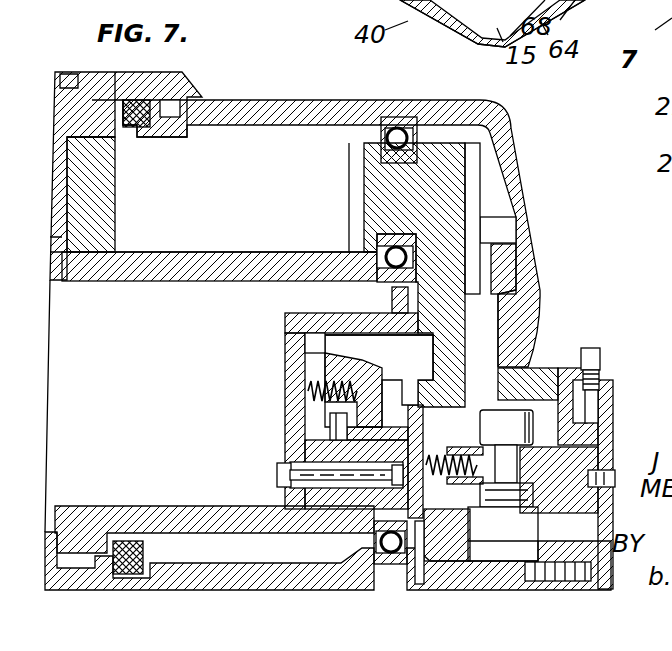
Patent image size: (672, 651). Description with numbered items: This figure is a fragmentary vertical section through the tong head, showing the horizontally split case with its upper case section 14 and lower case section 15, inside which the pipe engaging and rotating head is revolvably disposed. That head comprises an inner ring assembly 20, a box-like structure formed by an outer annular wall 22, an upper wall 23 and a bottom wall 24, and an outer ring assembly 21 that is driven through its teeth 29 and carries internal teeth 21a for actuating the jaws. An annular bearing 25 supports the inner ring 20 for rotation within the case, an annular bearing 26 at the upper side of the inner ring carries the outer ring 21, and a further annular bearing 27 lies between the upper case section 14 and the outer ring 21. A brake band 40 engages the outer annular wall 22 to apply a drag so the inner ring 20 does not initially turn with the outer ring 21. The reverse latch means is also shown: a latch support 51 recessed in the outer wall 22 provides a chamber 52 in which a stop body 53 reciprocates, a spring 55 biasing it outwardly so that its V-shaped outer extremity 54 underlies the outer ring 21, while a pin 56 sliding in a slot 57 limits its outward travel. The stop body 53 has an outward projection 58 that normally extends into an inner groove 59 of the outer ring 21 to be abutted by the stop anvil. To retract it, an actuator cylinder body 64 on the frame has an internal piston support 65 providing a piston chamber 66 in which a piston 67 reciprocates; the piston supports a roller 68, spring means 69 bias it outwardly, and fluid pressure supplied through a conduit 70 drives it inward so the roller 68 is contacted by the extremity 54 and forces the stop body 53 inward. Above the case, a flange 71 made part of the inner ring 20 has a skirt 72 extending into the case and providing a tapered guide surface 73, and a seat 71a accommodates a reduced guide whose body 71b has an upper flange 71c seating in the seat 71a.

The upper case section 14 is at (515, 133).
The lower case section 15 is at (532, 283).
The inner ring assembly 20 is at (183, 252).
The outer ring assembly 21 is at (480, 182).
The internal teeth 21a is at (358, 183).
The outer annular wall 22 is at (392, 296).
The upper wall 23 is at (157, 278).
The bottom wall 24 is at (157, 506).
The annular bearing 25 is at (387, 562).
The annular bearing 26 is at (377, 240).
The annular bearing 27 is at (390, 120).
The teeth 29 is at (465, 220).
The brake band 40 is at (417, 524).
The latch support 51 is at (287, 395).
The chamber 52 is at (314, 342).
The stop body 53 is at (330, 362).
The V-shaped outer extremity 54 is at (478, 410).
The spring 55 is at (307, 384).
The pin 56 is at (334, 417).
The slot 57 is at (284, 451).
The outward projection 58 is at (433, 340).
The inner groove 59 is at (433, 362).
The actuator cylinder body 64 is at (533, 368).
The internal piston support 65 is at (570, 435).
The piston chamber 66 is at (597, 507).
The piston 67 is at (573, 467).
The roller 68 is at (515, 415).
The spring means 69 is at (438, 472).
The conduit 70 is at (590, 350).
The flange 71 is at (212, 62).
The seat 71a is at (97, 84).
The body 71b is at (63, 155).
The upper flange 71c is at (72, 72).
The skirt 72 is at (105, 172).
The tapered guide surface 73 is at (62, 183).